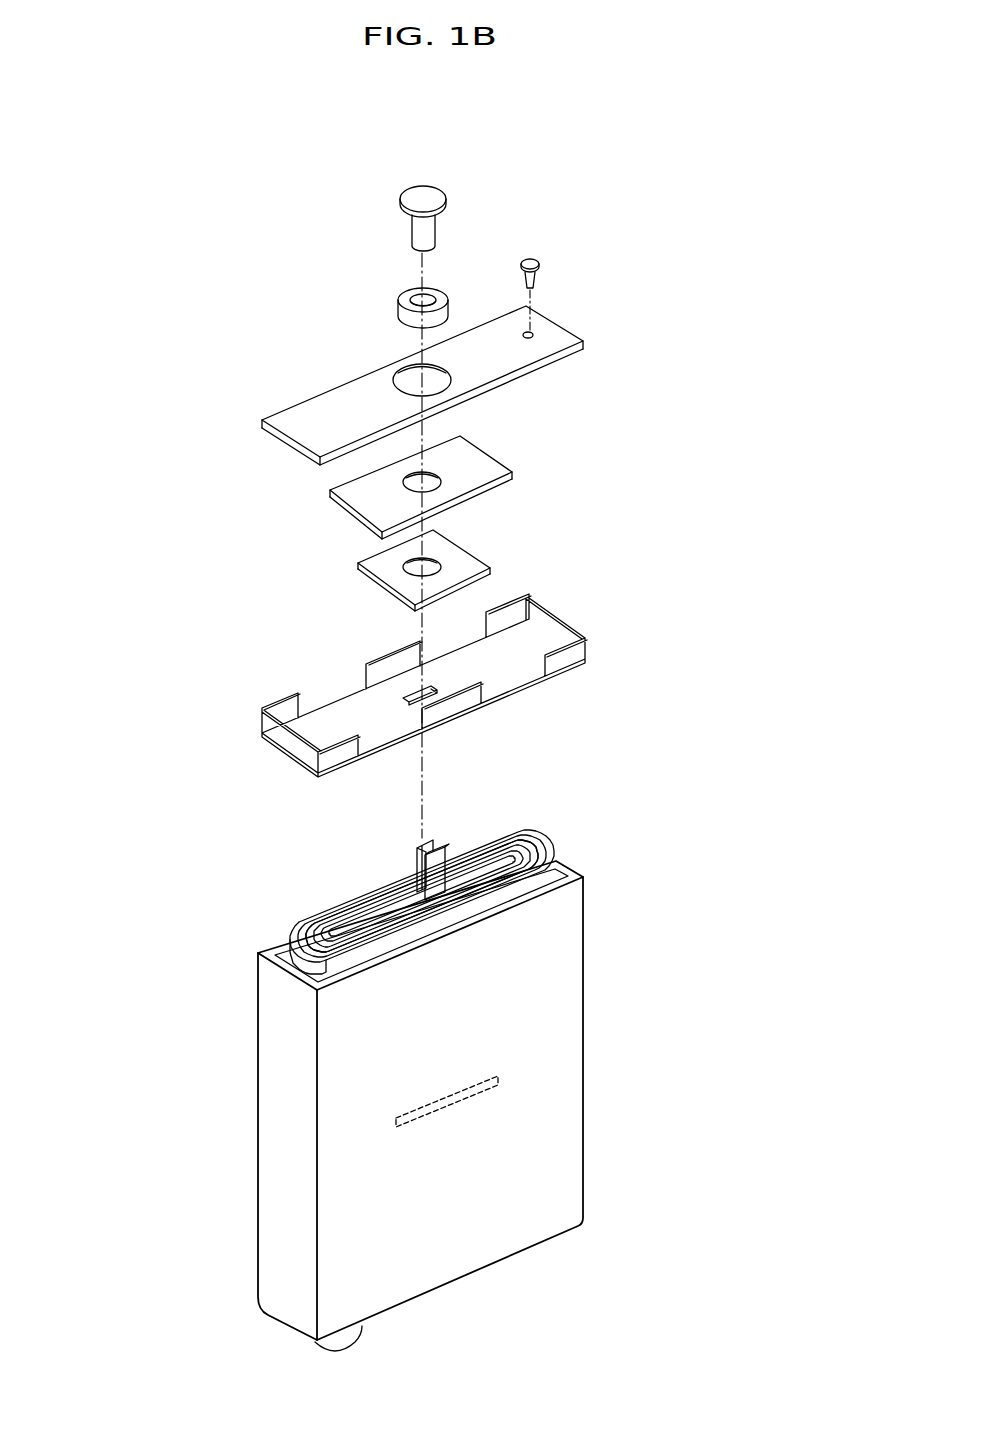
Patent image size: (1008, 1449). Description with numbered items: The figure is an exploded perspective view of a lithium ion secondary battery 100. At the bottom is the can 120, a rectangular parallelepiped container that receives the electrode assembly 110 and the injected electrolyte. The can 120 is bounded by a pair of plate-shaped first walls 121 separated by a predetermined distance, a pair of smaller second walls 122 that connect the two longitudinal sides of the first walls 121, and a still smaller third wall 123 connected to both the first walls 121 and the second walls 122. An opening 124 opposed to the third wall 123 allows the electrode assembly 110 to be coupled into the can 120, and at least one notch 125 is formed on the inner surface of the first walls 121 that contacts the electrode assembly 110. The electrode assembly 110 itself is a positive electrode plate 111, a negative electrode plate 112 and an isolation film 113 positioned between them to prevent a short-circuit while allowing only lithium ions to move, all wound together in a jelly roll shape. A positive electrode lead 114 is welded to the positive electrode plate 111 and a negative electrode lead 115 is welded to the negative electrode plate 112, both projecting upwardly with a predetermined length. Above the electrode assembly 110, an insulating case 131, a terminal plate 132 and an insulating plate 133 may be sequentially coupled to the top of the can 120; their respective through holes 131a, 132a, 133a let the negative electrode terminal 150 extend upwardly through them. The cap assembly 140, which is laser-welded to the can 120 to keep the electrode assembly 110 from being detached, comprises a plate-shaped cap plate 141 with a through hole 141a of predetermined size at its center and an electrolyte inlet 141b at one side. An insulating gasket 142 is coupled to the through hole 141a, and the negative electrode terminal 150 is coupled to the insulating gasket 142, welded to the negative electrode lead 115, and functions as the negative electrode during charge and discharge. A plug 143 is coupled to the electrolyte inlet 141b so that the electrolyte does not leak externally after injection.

The secondary battery 100 is at (750, 393).
The electrode assembly 110 is at (613, 800).
The positive electrode plate 111 is at (547, 857).
The negative electrode plate 112 is at (525, 840).
The isolation film 113 is at (542, 850).
The positive electrode lead 114 is at (420, 863).
The negative electrode lead 115 is at (450, 858).
The can 120 is at (148, 1058).
The first walls 121 is at (343, 1202).
The second walls 122 is at (278, 1117).
The third wall 123 is at (277, 1333).
The opening 124 is at (292, 968).
The notch 125 is at (462, 1098).
The insulating case 131 is at (552, 610).
The through hole 131a is at (410, 692).
The terminal plate 132 is at (383, 565).
The through hole 132a is at (438, 553).
The insulating plate 133 is at (365, 497).
The through hole 133a is at (443, 462).
The cap assembly 140 is at (250, 266).
The cap plate 141 is at (318, 405).
The through hole 141a is at (403, 367).
The electrolyte inlet 141b is at (537, 333).
The insulating gasket 142 is at (400, 288).
The plug 143 is at (532, 260).
The negative electrode terminal 150 is at (413, 193).